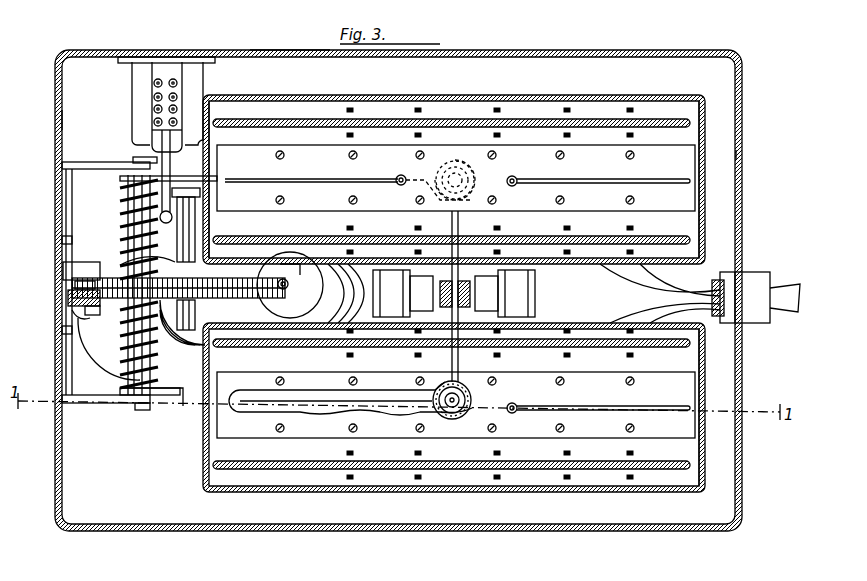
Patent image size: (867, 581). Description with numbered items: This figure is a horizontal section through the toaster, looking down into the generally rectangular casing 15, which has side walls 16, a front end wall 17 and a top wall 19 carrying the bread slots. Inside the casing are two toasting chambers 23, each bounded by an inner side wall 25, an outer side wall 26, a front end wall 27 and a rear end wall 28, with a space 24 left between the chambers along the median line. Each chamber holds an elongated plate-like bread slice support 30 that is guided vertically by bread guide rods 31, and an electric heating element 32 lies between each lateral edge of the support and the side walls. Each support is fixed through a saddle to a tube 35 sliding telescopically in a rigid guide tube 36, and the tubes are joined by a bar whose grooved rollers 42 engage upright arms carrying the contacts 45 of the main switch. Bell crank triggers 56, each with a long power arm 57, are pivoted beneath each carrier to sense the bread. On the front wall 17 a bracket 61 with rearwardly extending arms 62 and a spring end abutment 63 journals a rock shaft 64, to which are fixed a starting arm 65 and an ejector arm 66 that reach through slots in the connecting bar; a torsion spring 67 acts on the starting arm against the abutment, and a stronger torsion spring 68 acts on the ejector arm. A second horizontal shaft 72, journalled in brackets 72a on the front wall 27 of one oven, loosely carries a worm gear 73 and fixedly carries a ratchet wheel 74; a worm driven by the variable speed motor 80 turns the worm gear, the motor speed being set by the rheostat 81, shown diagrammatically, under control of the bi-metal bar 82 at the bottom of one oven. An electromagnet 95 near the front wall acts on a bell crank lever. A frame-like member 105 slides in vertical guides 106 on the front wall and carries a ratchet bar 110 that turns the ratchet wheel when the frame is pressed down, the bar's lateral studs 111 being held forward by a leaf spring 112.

The casing 15 is at (712, 53).
The side walls 16 is at (290, 40).
The front end wall 17 is at (56, 103).
The top wall 19 is at (288, 290).
The toasting chambers 23 is at (537, 95).
The space 24 is at (735, 272).
The inner side wall 25 is at (598, 270).
The outer side wall 26 is at (641, 95).
The front end wall of chamber 27 is at (212, 95).
The rear end wall of chamber 28 is at (705, 188).
The bread slice support 30 is at (695, 168).
The bread guide rods 31 is at (349, 155).
The electric heating element 32 is at (440, 95).
The tube 35 is at (448, 381).
The guide tube 36 is at (462, 382).
The grooved rollers 42 is at (520, 278).
The contact 45 is at (454, 293).
The triggers 56 is at (398, 176).
The power arm 57 is at (330, 182).
The bracket 61 is at (66, 200).
The arms 62 is at (62, 164).
The spring end abutment 63 is at (63, 268).
The rock shaft 64 is at (134, 159).
The starting arm 65 is at (200, 180).
The ejector arm 66 is at (178, 406).
The torsion spring 67 is at (122, 203).
The second torsion spring 68 is at (122, 388).
The second horizontal shaft 72 is at (178, 236).
The brackets 72a is at (201, 193).
The worm gear 73 is at (125, 278).
The ratchet wheel 74 is at (182, 326).
The electric motor 80 is at (358, 325).
The rheostat 81 is at (190, 75).
The bi-metal bar 82 is at (128, 236).
The electromagnet 95 is at (105, 345).
The frame-like member 105 is at (68, 297).
The vertical guides 106 is at (62, 239).
The ratchet bar 110 is at (105, 308).
The lateral studs 111 is at (75, 284).
The leaf spring 112 is at (93, 323).